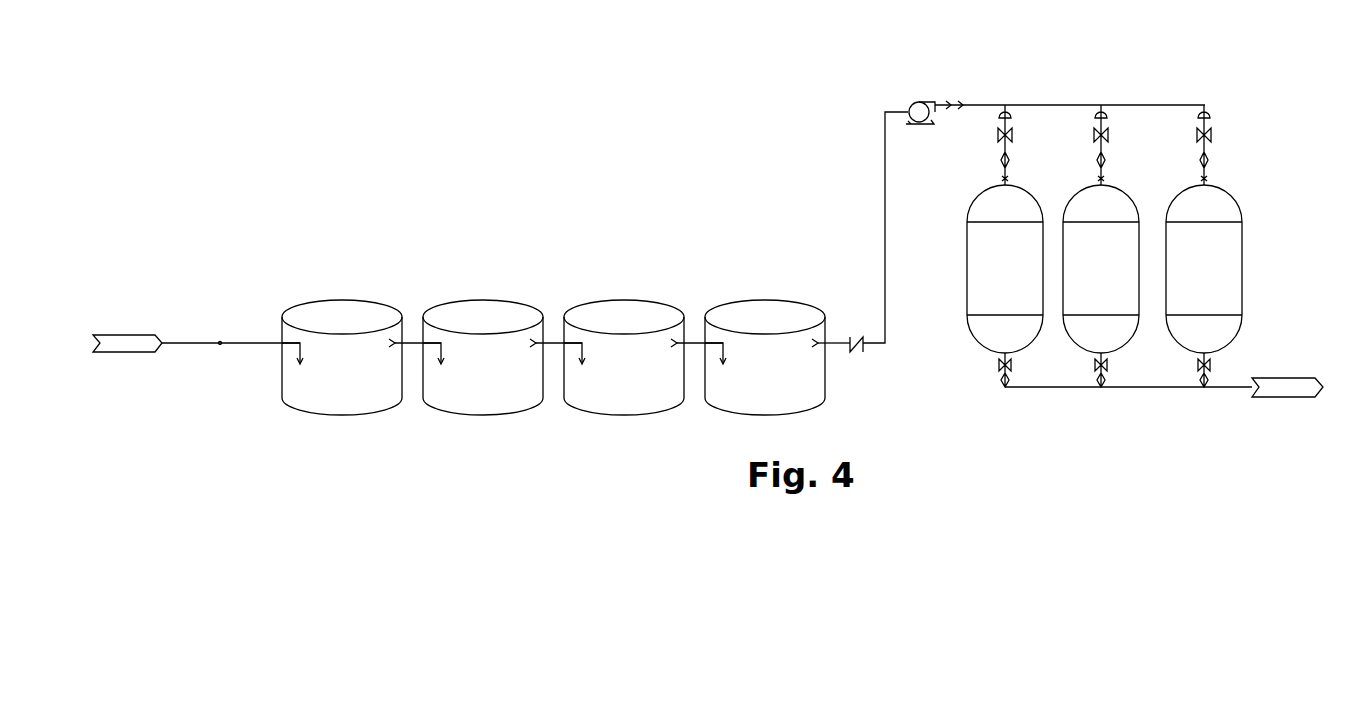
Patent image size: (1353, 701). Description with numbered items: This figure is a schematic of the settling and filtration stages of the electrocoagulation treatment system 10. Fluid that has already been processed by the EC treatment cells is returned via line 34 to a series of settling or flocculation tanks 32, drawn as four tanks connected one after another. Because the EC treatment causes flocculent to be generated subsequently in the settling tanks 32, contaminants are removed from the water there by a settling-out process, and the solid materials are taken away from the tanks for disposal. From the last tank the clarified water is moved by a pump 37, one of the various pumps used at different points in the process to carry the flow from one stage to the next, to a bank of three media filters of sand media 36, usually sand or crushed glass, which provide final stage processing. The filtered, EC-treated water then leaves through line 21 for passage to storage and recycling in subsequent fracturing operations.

The water treatment system 10 is at (1266, 136).
The line 21 is at (1283, 398).
The settling tanks 32 is at (445, 291).
The line 34 is at (123, 340).
The sand media 36 is at (1269, 273).
The pumps 37 is at (912, 103).